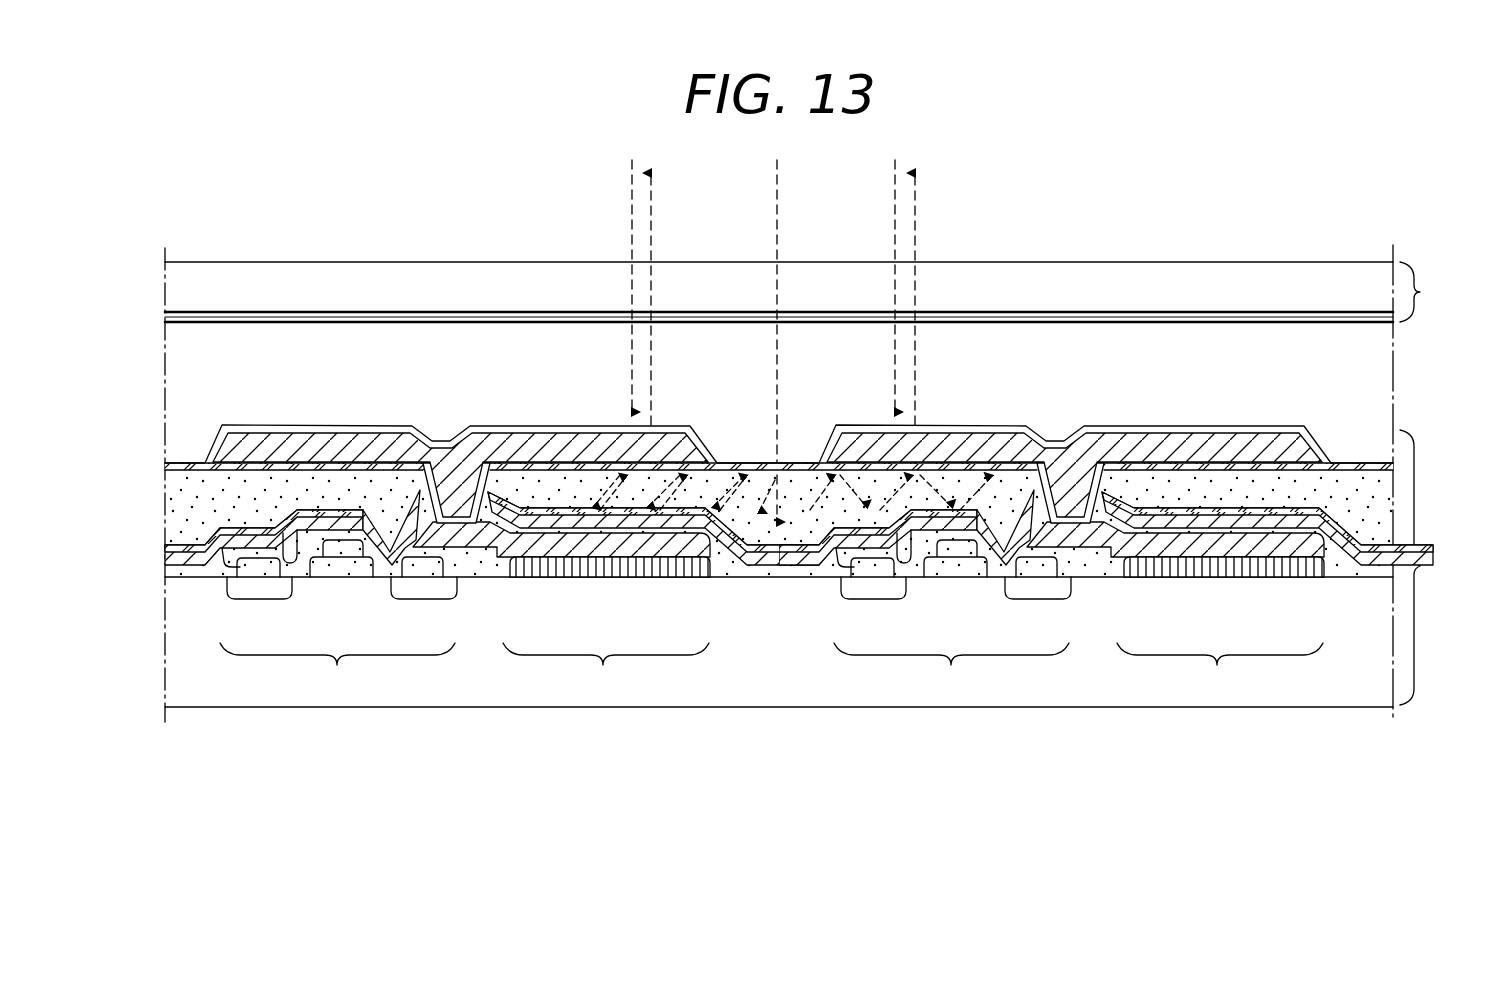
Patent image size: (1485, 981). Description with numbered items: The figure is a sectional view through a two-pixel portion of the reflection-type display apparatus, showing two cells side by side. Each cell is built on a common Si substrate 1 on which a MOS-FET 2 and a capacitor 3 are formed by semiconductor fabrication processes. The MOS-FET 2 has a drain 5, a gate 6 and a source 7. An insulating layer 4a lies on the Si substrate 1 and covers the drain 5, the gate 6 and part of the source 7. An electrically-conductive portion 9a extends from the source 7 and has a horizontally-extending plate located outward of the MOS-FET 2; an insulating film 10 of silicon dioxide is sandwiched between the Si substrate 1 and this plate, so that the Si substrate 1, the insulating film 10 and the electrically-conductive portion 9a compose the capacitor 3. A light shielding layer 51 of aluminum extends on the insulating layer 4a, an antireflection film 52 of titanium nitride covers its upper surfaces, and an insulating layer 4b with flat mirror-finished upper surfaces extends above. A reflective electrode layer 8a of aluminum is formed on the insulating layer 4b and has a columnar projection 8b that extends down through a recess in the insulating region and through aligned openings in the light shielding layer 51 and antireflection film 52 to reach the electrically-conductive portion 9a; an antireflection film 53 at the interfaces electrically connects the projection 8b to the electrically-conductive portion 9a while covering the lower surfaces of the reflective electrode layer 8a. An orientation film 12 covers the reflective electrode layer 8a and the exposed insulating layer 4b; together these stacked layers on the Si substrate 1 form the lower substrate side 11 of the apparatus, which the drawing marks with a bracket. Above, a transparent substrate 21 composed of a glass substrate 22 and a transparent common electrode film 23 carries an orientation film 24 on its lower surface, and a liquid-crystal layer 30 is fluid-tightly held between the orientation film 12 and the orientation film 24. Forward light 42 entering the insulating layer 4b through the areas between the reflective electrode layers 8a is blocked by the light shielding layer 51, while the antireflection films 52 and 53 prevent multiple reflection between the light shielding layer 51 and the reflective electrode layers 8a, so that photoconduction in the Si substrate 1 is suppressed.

The Si substrate 1 is at (468, 690).
The MOS-FET 2 is at (339, 668).
The capacitor 3 is at (605, 668).
The insulating layer 4a is at (812, 572).
The insulating layer 4b is at (748, 480).
The drain 5 is at (254, 590).
The gate 6 is at (342, 572).
The source 7 is at (410, 590).
The reflective electrode layer 8a is at (487, 440).
The projection 8b is at (453, 500).
The electrically-conductive portion 9a is at (492, 560).
The insulating film 10 is at (658, 570).
The active matrix substrate 11 is at (1424, 566).
The orientation film 12 is at (540, 430).
The transparent substrate 21 is at (1424, 292).
The glass substrate 22 is at (963, 262).
The common electrode film 23 is at (1030, 311).
The orientation film 24 is at (1085, 322).
The liquid-crystal layer 30 is at (1365, 392).
The forward light 42 is at (780, 236).
The light shielding layer 51 is at (755, 562).
The antireflection film 52 is at (790, 562).
The antireflection film 53 is at (340, 466).